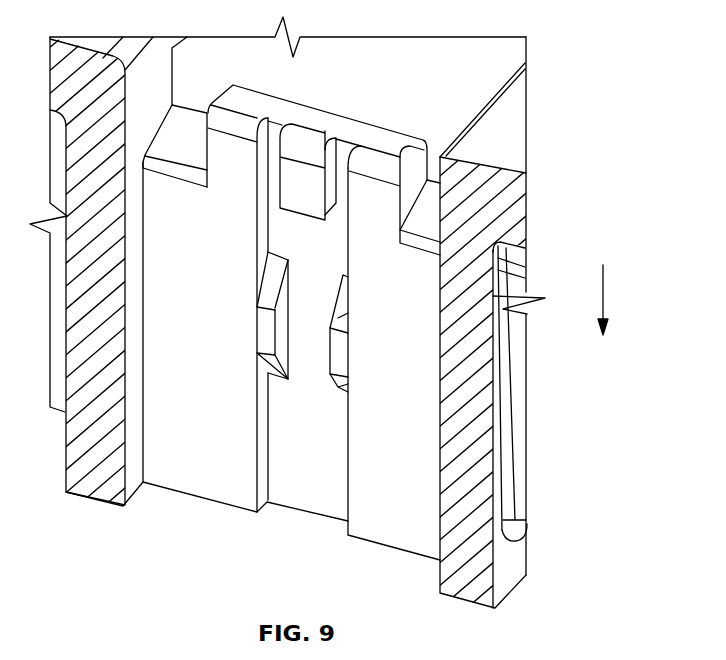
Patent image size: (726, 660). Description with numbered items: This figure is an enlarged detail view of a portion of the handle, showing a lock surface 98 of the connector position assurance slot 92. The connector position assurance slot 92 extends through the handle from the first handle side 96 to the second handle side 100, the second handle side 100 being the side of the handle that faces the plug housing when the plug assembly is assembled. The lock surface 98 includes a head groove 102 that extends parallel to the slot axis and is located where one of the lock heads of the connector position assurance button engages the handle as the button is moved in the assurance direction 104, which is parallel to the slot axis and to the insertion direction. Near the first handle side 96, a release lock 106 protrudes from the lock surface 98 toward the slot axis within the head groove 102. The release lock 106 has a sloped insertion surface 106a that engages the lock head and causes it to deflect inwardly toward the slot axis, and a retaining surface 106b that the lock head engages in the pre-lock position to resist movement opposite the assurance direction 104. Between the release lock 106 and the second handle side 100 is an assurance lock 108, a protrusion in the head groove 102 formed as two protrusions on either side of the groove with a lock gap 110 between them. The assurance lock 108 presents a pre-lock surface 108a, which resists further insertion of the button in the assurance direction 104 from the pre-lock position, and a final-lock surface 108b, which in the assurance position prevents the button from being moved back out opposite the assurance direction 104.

The connector position assurance slot 92 is at (160, 78).
The first handle side 96 is at (517, 128).
The lock surface 98 is at (178, 477).
The second handle side 100 is at (393, 548).
The head groove 102 is at (312, 500).
The assurance direction 104 is at (603, 298).
The release lock 106 is at (292, 188).
The insertion surface 106a is at (308, 148).
The retaining surface 106b is at (330, 213).
The assurance lock 108 is at (268, 333).
The pre-lock surface 108a is at (265, 292).
The final-lock surface 108b is at (265, 360).
The lock gap 110 is at (307, 397).